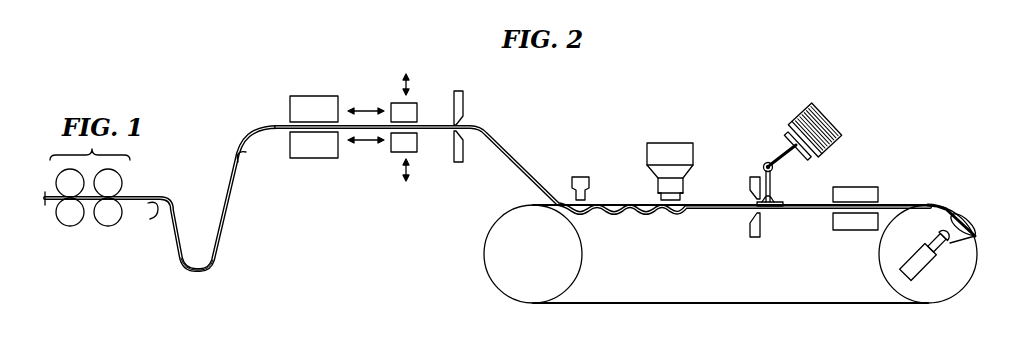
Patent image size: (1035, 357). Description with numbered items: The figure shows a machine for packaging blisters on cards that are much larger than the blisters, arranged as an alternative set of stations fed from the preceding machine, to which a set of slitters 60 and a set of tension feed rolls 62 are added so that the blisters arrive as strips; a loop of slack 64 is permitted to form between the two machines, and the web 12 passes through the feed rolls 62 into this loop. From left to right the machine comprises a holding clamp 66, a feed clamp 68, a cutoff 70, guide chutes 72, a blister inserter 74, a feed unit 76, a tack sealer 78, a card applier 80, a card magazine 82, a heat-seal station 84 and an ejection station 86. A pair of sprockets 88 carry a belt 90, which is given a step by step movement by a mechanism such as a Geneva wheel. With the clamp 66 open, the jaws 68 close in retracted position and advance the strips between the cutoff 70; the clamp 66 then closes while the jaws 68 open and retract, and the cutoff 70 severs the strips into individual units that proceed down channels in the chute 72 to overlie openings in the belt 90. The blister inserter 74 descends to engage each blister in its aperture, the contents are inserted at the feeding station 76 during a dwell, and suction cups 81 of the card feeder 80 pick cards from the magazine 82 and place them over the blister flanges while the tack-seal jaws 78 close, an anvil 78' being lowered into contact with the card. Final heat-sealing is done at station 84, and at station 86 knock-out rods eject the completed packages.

In FIG. 1, the web 12 is at (161, 198).
In FIG. 1, the slitters 60 is at (80, 187).
In FIG. 1, the tension feed rolls 62 is at (129, 196).
In FIG. 1, the loop of slack 64 is at (219, 272).
In FIG. 2, the holding clamp 66 is at (314, 112).
In FIG. 2, the feed clamp 68 is at (391, 127).
In FIG. 2, the cutoff 70 is at (472, 118).
In FIG. 2, the guide chutes 72 is at (603, 170).
In FIG. 2, the blister inserter 74 is at (588, 175).
In FIG. 2, the feed unit 76 is at (673, 158).
In FIG. 2, the tack sealer 78 is at (739, 229).
In FIG. 2, the anvil 78' is at (739, 182).
In FIG. 2, the card applier 80 is at (785, 185).
In FIG. 2, the suction cups 81 is at (773, 148).
In FIG. 2, the card magazine 82 is at (803, 126).
In FIG. 2, the heat-seal station 84 is at (855, 199).
In FIG. 2, the ejection station 86 is at (955, 242).
In FIG. 2, the sprockets 88 is at (726, 266).
In FIG. 2, the belt 90 is at (730, 265).